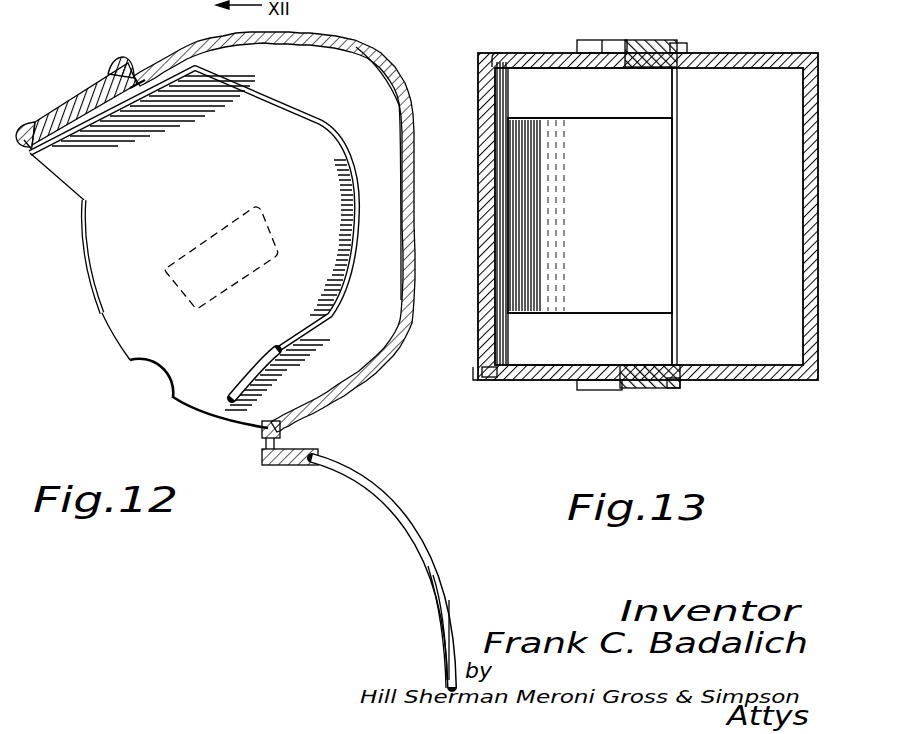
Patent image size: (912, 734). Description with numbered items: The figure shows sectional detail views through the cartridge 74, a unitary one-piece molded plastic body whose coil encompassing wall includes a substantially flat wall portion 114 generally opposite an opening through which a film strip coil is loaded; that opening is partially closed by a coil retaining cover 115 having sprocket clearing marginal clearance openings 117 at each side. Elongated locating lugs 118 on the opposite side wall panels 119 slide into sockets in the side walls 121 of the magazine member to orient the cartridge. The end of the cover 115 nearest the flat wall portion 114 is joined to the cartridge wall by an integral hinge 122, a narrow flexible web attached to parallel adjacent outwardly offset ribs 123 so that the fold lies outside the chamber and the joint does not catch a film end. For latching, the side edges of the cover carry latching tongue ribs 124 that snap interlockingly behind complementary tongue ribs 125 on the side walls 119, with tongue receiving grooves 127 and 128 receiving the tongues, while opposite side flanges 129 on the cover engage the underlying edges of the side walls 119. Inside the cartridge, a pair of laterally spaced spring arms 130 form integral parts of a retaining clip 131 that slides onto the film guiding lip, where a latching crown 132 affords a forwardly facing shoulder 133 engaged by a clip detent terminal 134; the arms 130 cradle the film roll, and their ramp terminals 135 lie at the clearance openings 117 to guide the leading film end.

In FIG. 12, the cartridge 74 is at (297, 222).
In FIG. 13, the cartridge 74 is at (622, 218).
In FIG. 12, the flat wall portion 114 is at (413, 193).
In FIG. 13, the flat wall portion 114 is at (803, 262).
In FIG. 12, the coil retaining cover 115 is at (432, 508).
In FIG. 13, the coil retaining cover 115 is at (476, 250).
In FIG. 12, the marginal clearance openings 117 is at (403, 481).
In FIG. 13, the marginal clearance openings 117 is at (615, 106).
In FIG. 12, the locating lugs 118 is at (221, 219).
In FIG. 13, the locating lugs 118 is at (610, 29).
In FIG. 13, the side wall panels 119 is at (720, 41).
In FIG. 12, the side walls of the magazine member 121 is at (38, 118).
In FIG. 12, the integral hinge 122 is at (262, 438).
In FIG. 13, the integral hinge 122 is at (665, 38).
In FIG. 12, the outwardly offset ribs 123 is at (282, 438).
In FIG. 12, the latching tongue ribs of the cover 124 is at (436, 597).
In FIG. 13, the latching tongue ribs of the cover 124 is at (507, 68).
In FIG. 12, the latching tongue ribs of the side walls 125 is at (91, 284).
In FIG. 13, the latching tongue ribs of the side walls 125 is at (492, 55).
In FIG. 12, the tongue receiving groove 127 is at (93, 271).
In FIG. 13, the tongue receiving groove 127 is at (503, 53).
In FIG. 12, the tongue receiving groove 128 is at (447, 600).
In FIG. 13, the tongue receiving groove 128 is at (485, 378).
In FIG. 12, the side flanges 129 is at (457, 623).
In FIG. 13, the side flanges 129 is at (478, 77).
In FIG. 12, the spring arms 130 is at (333, 307).
In FIG. 12, the retaining clip 131 is at (28, 144).
In FIG. 12, the latching crown 132 is at (76, 98).
In FIG. 12, the forwardly facing shoulder 133 is at (133, 46).
In FIG. 12, the clip detent terminal 134 is at (138, 81).
In FIG. 12, the ramp terminals 135 is at (243, 375).